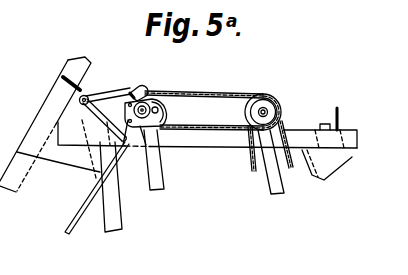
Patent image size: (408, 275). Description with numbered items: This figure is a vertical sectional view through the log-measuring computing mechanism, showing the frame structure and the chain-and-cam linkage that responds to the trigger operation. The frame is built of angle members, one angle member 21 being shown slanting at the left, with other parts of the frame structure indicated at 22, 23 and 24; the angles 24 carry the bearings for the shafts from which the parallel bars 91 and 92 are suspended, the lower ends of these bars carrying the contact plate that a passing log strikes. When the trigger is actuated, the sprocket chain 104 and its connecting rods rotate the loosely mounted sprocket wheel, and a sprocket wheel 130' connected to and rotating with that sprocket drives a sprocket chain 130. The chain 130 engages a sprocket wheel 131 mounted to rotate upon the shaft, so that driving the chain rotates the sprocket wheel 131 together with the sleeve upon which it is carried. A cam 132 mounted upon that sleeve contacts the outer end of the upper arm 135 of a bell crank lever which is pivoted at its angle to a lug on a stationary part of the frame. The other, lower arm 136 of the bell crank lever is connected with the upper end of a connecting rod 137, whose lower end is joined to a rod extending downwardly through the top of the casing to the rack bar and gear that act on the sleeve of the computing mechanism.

The angle member 21 is at (23, 187).
The frame structure part 22 is at (125, 225).
The frame structure part 23 is at (325, 177).
The angle 24 is at (212, 149).
The parallel bar 91 is at (166, 186).
The parallel bar 92 is at (271, 190).
The sprocket chain 104 is at (251, 169).
The sprocket chain 130 is at (213, 97).
The sprocket wheel 130' is at (312, 97).
The sprocket wheel 131 is at (134, 96).
The cam 132 is at (168, 110).
The upper arm 135 is at (109, 93).
The lower arm 136 is at (73, 103).
The connecting rod 137 is at (80, 234).